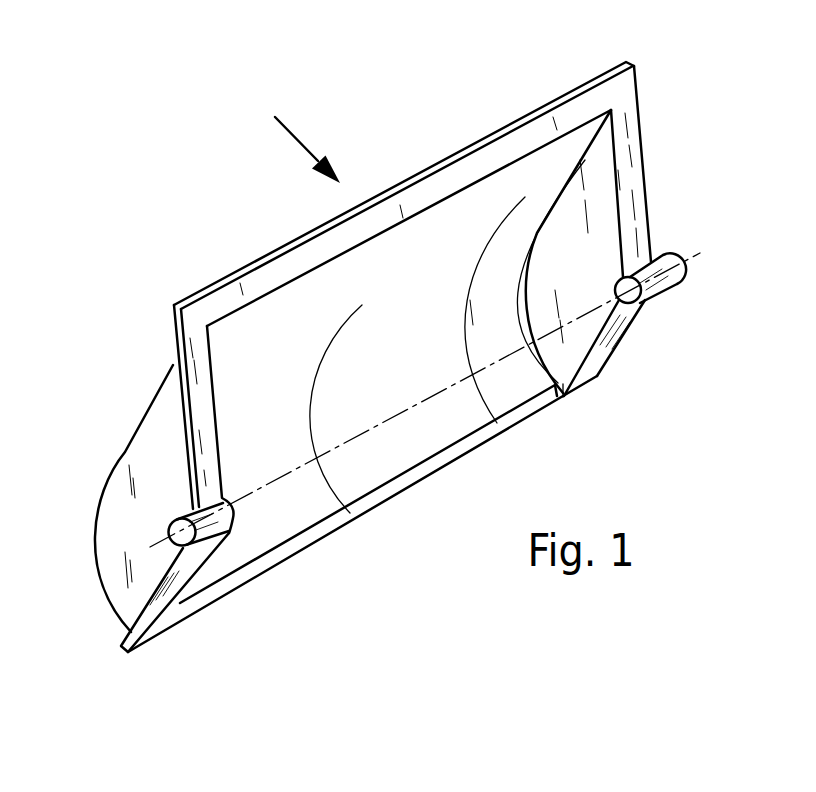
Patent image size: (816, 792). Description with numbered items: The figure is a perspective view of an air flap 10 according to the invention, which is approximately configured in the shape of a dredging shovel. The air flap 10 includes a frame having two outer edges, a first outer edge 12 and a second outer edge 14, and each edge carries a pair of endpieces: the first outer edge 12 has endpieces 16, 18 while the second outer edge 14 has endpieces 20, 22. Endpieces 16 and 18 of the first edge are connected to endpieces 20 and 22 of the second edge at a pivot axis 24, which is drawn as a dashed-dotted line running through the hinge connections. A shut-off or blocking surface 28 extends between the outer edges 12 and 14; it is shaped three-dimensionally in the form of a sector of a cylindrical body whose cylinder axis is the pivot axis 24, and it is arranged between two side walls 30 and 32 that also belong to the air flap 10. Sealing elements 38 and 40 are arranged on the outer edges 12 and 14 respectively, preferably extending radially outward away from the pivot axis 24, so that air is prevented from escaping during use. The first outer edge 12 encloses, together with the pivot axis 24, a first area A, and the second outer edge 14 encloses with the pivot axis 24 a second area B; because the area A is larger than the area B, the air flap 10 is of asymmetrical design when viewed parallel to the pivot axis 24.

The air flap 10 is at (190, 122).
The first outer edge 12 is at (270, 254).
The second outer edge 14 is at (311, 545).
The endpiece 16 is at (636, 249).
The endpiece 18 is at (204, 486).
The endpiece 20 is at (596, 374).
The endpiece 22 is at (153, 628).
The pivot axis 24 is at (692, 258).
The shut-off or blocking surface 28 is at (120, 455).
The side wall 30 is at (610, 196).
The side wall 32 is at (108, 528).
The sealing element 38 is at (578, 110).
The sealing element 40 is at (483, 436).
The first area A is at (435, 232).
The second area B is at (392, 457).